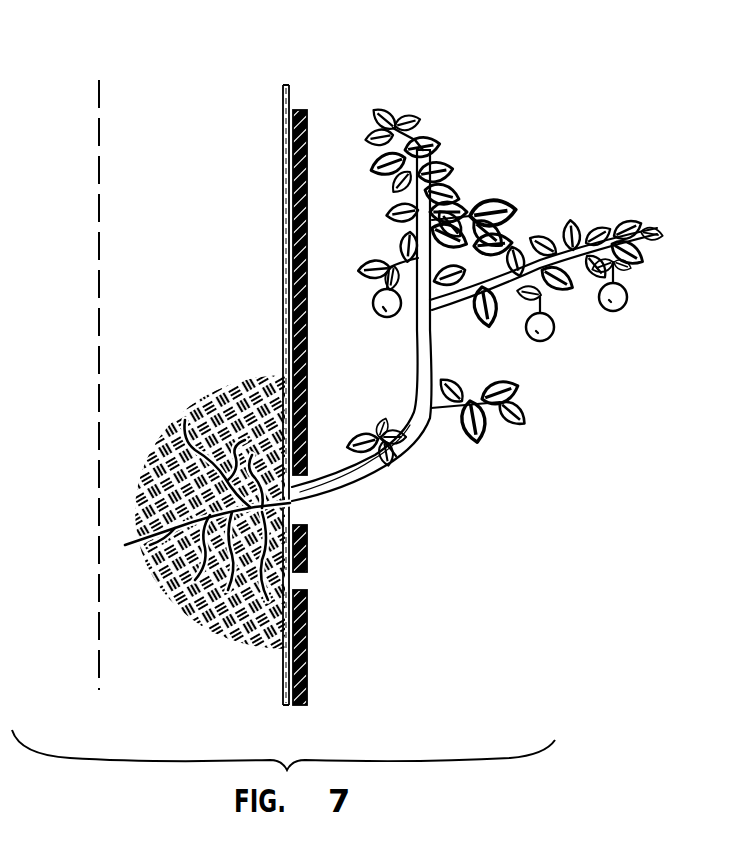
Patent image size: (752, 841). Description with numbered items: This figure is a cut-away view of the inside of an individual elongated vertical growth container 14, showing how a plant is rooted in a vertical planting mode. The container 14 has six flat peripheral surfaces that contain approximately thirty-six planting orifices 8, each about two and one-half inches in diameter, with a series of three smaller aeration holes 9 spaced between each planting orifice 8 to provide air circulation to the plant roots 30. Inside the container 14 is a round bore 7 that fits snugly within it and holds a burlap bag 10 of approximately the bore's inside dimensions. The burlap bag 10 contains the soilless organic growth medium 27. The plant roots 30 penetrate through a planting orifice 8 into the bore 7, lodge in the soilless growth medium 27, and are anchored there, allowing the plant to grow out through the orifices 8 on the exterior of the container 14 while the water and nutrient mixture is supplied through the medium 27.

The burlap bag 10 is at (166, 126).
The bore 7 is at (291, 97).
The planting orifice 8 is at (293, 516).
The aeration hole 9 is at (299, 582).
The vertical growth container 14 is at (307, 357).
The soilless organic growth medium 27 is at (203, 410).
The plant roots 30 is at (150, 525).